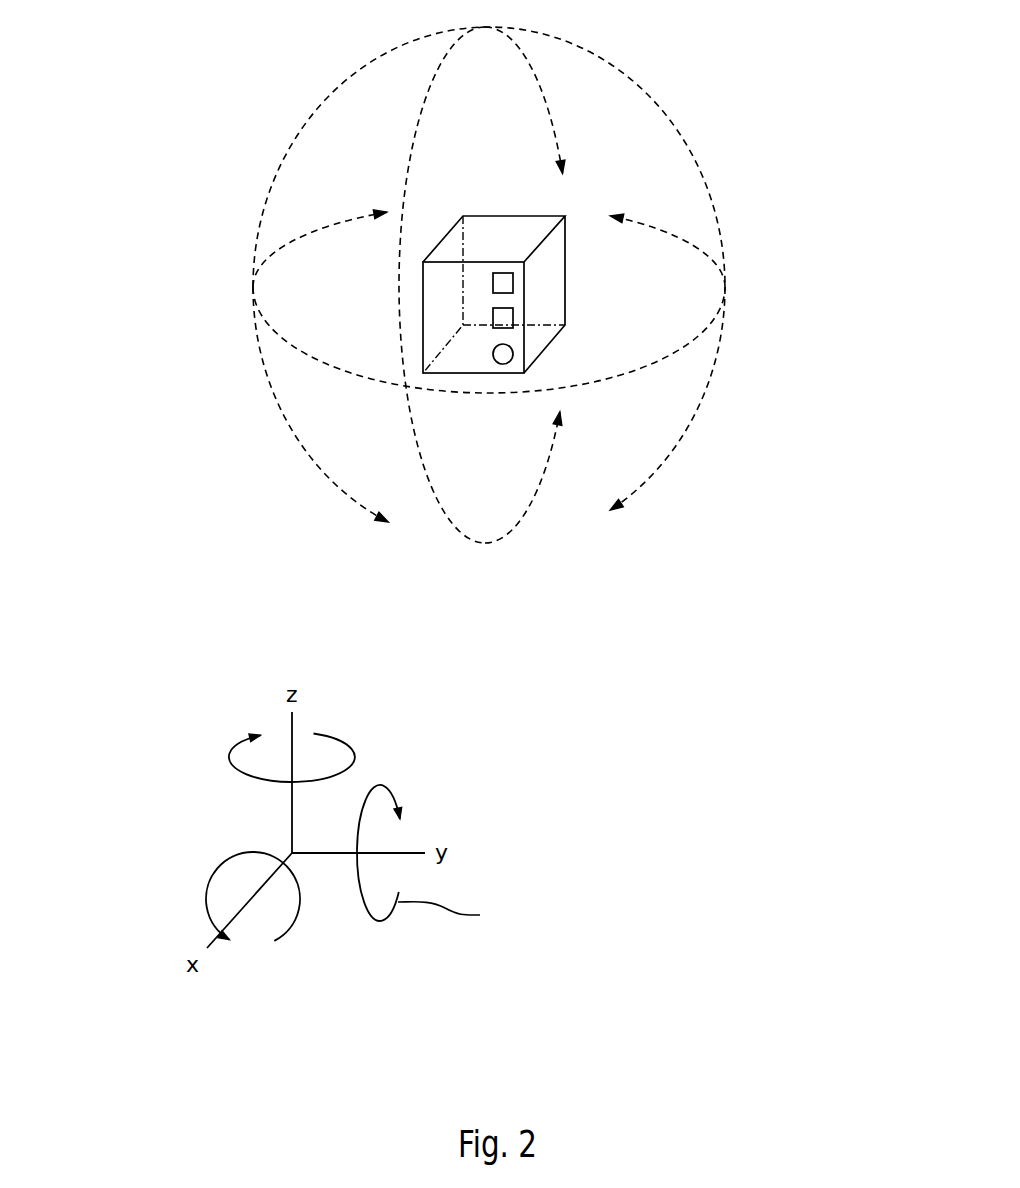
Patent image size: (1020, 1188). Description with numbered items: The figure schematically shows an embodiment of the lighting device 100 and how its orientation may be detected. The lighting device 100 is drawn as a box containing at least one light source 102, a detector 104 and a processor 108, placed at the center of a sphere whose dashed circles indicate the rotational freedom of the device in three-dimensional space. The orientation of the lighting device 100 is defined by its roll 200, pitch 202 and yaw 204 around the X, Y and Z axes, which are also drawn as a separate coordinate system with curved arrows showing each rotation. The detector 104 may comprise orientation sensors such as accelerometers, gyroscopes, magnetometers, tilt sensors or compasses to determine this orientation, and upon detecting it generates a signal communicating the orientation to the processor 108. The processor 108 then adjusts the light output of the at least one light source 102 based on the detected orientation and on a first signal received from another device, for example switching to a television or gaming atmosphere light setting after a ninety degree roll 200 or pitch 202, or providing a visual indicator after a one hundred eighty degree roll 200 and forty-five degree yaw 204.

The lighting device 100 is at (503, 218).
The light source 102 is at (503, 354).
The detector 104 is at (506, 318).
The processor 108 is at (506, 283).
The roll 200 is at (670, 462).
The pitch 202 is at (520, 525).
The yaw 204 is at (685, 353).